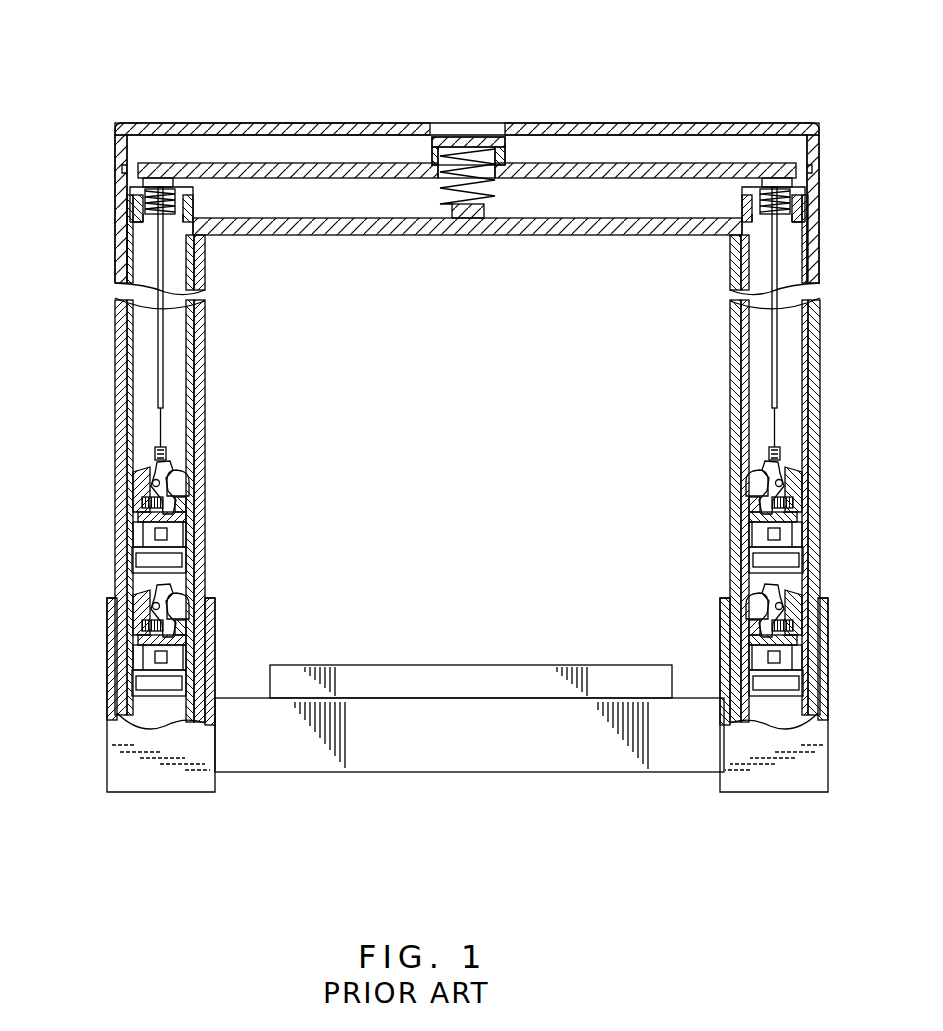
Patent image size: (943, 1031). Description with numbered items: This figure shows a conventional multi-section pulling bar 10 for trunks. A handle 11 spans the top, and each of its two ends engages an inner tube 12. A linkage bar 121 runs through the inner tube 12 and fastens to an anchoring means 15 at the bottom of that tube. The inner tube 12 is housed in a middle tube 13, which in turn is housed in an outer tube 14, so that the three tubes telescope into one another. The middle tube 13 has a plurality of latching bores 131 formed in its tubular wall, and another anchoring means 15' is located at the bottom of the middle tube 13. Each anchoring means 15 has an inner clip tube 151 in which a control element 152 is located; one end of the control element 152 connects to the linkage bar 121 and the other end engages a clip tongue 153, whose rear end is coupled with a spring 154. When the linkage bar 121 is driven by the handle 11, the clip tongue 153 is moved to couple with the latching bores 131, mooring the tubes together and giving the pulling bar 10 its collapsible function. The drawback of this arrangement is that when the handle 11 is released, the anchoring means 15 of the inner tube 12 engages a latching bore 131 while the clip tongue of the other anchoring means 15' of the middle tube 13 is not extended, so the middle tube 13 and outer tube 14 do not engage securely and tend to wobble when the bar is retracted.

The multi-section pulling bar 10 is at (775, 79).
The handle 11 is at (115, 152).
The inner tube 12 is at (131, 220).
The linkage bar 121 is at (158, 332).
The middle tube 13 is at (119, 265).
The outer tube 14 is at (119, 328).
The anchoring means 15 is at (189, 511).
The inner clip tube 151 is at (188, 537).
The control element 152 is at (190, 482).
The clip tongue 153 is at (192, 518).
The spring 154 is at (133, 505).
The latching bores 131 is at (190, 500).
The another anchoring means 15' is at (117, 684).